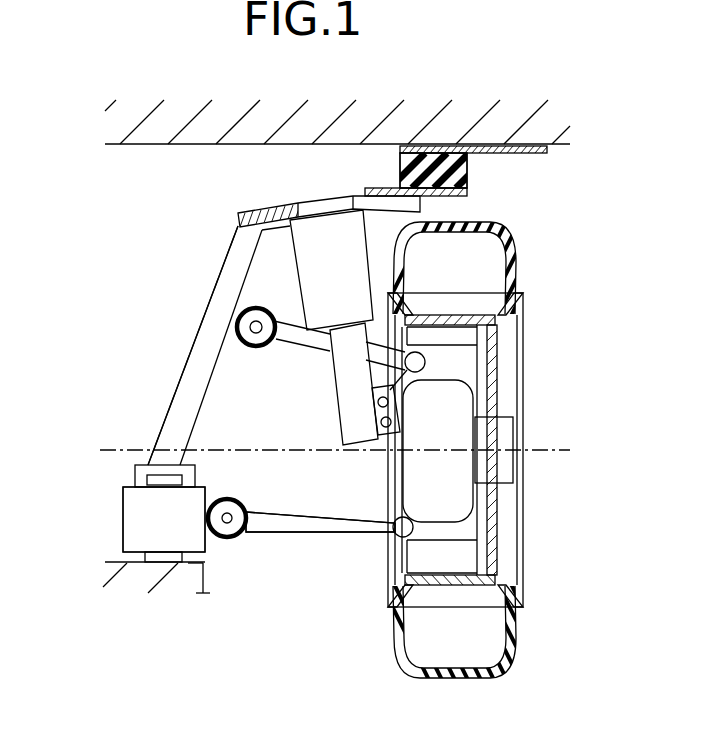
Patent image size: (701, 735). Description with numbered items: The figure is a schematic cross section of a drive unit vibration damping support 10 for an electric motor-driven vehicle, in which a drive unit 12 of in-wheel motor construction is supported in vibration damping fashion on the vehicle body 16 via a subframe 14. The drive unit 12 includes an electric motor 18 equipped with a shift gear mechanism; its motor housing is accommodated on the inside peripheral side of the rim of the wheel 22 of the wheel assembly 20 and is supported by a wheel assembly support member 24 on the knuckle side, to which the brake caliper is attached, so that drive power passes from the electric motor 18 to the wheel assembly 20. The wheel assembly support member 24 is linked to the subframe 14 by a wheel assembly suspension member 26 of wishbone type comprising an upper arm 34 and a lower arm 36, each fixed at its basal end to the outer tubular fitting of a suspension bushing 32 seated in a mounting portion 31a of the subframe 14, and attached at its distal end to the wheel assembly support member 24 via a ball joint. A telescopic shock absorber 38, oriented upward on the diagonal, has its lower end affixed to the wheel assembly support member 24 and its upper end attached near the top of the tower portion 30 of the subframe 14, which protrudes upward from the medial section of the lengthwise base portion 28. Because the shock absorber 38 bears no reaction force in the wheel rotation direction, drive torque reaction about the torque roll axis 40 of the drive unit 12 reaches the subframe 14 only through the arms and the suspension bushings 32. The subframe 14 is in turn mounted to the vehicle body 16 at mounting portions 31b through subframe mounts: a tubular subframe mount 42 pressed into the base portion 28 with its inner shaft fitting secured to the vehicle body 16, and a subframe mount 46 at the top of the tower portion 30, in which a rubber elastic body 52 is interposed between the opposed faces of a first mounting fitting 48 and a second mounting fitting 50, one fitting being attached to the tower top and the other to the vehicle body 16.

The drive unit vibration damping support 10 is at (195, 293).
The drive unit 12 is at (399, 466).
The subframe 14 is at (121, 528).
The vehicle body 16 is at (163, 130).
The electric motor 18 is at (400, 487).
The wheel assembly 20 is at (538, 285).
The wheel 22 is at (496, 523).
The wheel assembly support member 24 is at (463, 363).
The wheel assembly suspension member 26 is at (299, 556).
The base portion 28 is at (140, 505).
The tower portion 30 is at (203, 350).
The mounting portion 31a is at (250, 350).
The mounting portion 31b is at (373, 178).
The suspension bushing 32 is at (257, 337).
The upper arm 34 is at (300, 336).
The lower arm 36 is at (286, 524).
The shock absorber 38 is at (290, 268).
The torque roll axis 40 is at (550, 448).
The subframe mount 42 is at (158, 480).
The subframe mount 46 is at (483, 165).
The first mounting fitting 48 is at (533, 153).
The second mounting fitting 50 is at (440, 197).
The rubber elastic body 52 is at (465, 182).